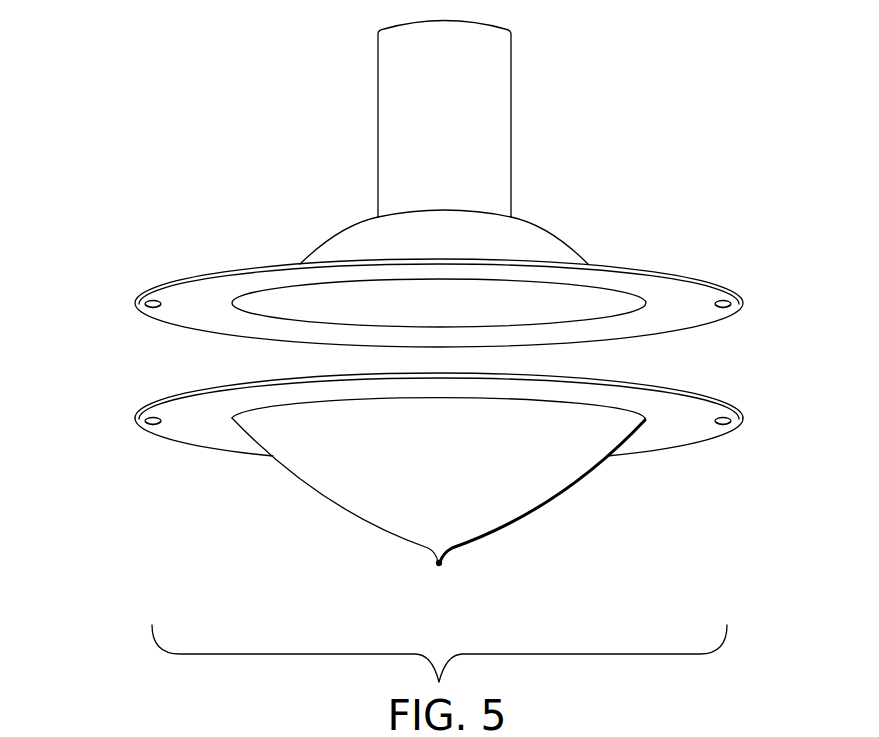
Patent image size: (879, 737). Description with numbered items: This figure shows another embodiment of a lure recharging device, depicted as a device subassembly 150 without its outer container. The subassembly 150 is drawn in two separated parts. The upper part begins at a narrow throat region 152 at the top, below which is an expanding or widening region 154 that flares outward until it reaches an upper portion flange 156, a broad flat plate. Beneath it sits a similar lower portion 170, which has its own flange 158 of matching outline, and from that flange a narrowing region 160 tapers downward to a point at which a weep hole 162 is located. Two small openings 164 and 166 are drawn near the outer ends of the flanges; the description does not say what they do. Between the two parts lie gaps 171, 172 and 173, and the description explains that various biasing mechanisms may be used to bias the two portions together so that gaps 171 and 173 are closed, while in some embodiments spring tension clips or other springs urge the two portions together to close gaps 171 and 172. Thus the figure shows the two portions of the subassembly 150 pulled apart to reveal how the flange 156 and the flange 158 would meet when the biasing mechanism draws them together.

The device subassembly 150 is at (665, 103).
The throat region 152 is at (512, 122).
The expanding or widening region 154 is at (549, 233).
The upper portion flange 156 is at (622, 263).
The flange 158 is at (702, 446).
The narrowing region 160 is at (494, 533).
The weep hole 162 is at (437, 564).
The aperture in upper plate 164 is at (738, 288).
The aperture in lower plate 166 is at (722, 415).
The lower portion 170 is at (582, 477).
The gap 171 is at (148, 412).
The gap 172 is at (183, 367).
The gap 173 is at (148, 291).